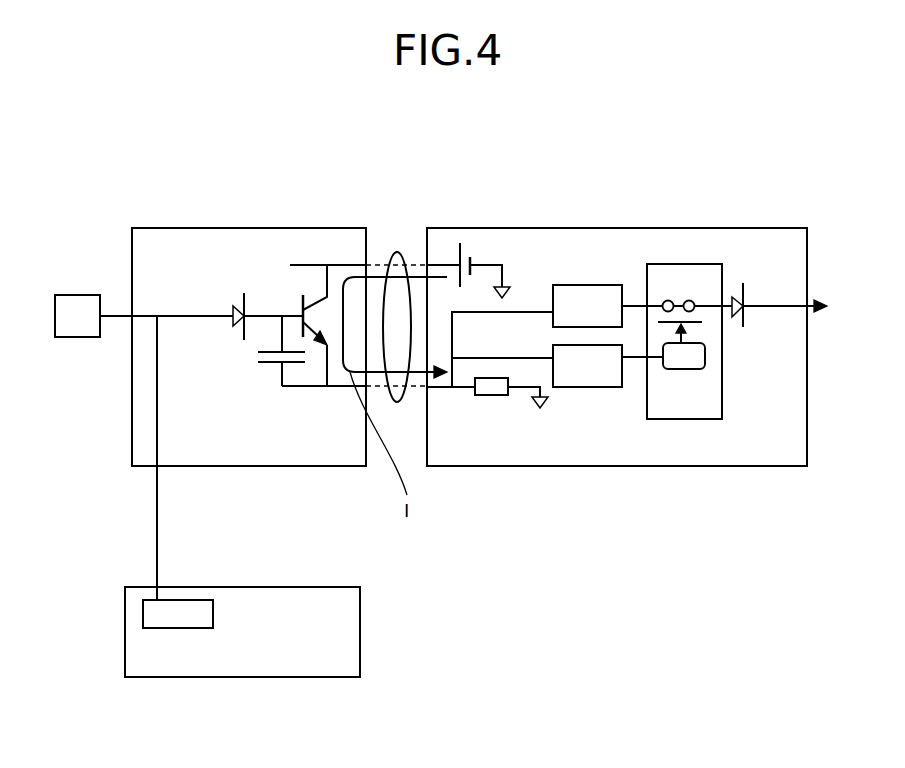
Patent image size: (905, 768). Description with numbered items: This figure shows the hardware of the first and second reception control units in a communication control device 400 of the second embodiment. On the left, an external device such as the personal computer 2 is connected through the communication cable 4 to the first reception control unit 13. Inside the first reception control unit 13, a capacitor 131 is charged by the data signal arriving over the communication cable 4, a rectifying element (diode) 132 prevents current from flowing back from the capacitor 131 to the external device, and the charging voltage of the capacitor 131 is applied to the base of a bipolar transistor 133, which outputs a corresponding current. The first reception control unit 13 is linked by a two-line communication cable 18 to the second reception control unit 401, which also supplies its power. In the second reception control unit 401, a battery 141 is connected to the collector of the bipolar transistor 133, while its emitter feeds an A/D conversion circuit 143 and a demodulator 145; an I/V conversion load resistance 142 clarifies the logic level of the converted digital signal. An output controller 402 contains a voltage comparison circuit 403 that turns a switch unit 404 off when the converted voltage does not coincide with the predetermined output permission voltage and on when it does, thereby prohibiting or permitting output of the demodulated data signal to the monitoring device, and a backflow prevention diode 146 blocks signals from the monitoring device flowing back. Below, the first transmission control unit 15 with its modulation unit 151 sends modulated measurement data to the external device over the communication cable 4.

The personal computer 2 is at (77, 296).
The communication cable 4 is at (110, 316).
The first reception control unit 13 is at (219, 228).
The capacitor 131 is at (276, 365).
The rectifying element (diode) 132 is at (243, 345).
The bipolar transistor 133 is at (303, 310).
The communication cable 18 is at (397, 252).
The first transmission control unit 15 is at (360, 620).
The modulation unit 151 is at (143, 612).
The communication control device 400 is at (544, 145).
The second reception control unit 401 is at (777, 228).
The battery 141 is at (470, 257).
The I/V conversion load resistance 142 is at (492, 395).
The A/D conversion circuit 143 is at (590, 387).
The demodulator 145 is at (587, 285).
The backflow prevention diode 146 is at (742, 283).
The output controller 402 is at (687, 419).
The voltage comparison circuit 403 is at (683, 369).
The switch unit 404 is at (680, 290).